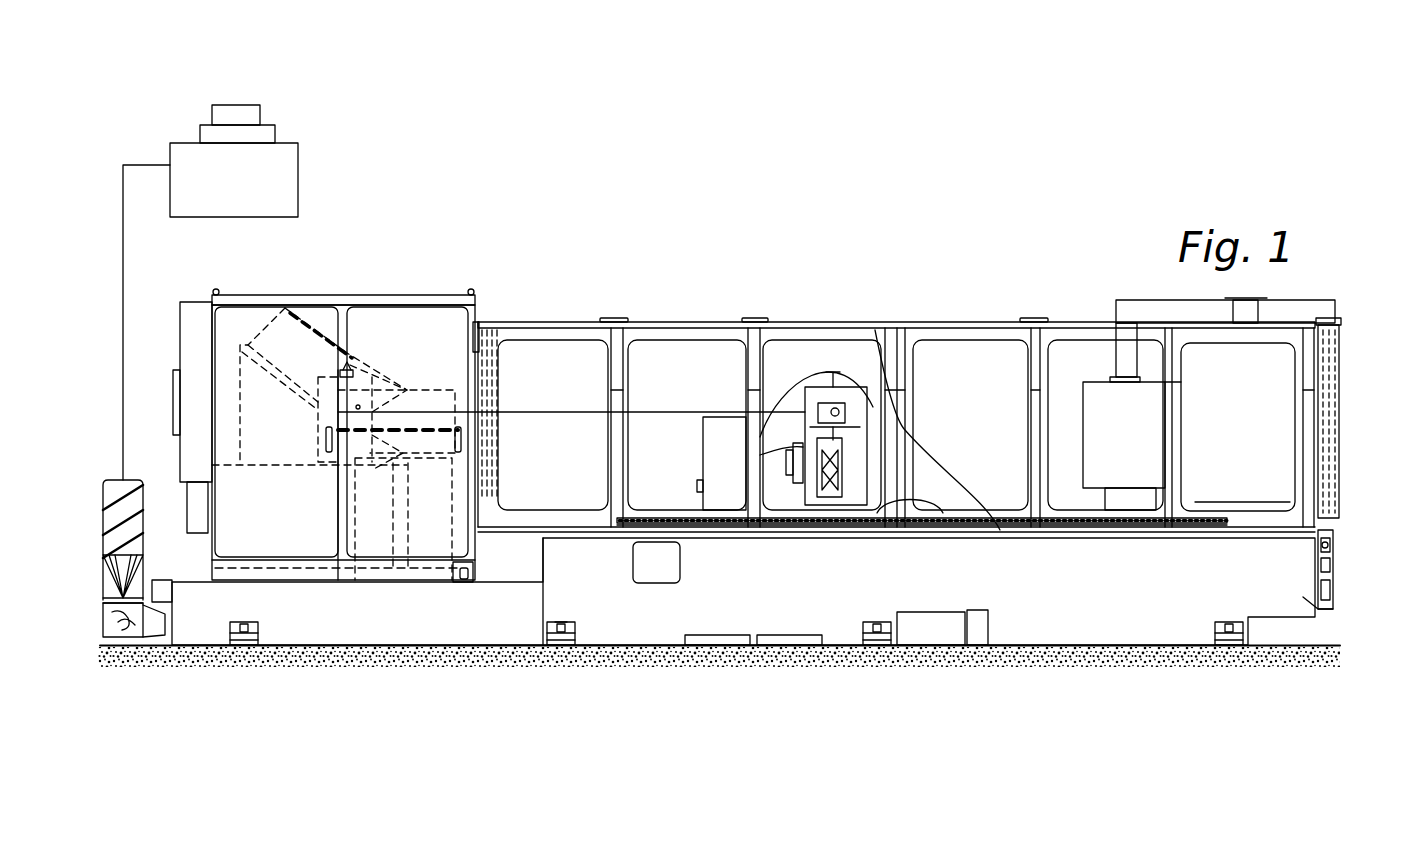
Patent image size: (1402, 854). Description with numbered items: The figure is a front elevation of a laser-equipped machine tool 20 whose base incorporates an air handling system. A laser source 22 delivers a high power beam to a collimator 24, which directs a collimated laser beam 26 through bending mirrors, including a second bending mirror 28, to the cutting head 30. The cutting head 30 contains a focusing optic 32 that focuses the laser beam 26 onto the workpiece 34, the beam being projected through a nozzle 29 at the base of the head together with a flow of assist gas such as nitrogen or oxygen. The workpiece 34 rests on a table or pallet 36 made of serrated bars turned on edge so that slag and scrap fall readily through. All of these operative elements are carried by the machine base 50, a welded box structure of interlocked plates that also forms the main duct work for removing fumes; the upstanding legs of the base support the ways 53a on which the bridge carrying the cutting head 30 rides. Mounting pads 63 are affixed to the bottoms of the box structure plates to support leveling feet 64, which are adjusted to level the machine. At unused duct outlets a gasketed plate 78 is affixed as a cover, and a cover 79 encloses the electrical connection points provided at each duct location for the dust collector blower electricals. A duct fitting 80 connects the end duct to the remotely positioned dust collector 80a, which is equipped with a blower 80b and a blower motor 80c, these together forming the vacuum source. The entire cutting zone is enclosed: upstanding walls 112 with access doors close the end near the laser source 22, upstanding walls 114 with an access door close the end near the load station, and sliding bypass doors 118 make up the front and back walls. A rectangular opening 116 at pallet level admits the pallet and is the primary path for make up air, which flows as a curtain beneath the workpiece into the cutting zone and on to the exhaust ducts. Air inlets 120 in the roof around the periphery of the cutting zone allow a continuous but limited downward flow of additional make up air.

The machine tool 20 is at (968, 190).
The laser source 22 is at (263, 323).
The collimator 24 is at (420, 390).
The collimated laser beam 26 is at (562, 412).
The second bending mirror 28 is at (845, 400).
The nozzle 29 is at (835, 498).
The cutting head 30 is at (799, 456).
The focusing optic 32 is at (867, 470).
The workpiece 34 is at (870, 524).
The table or pallet 36 is at (1085, 524).
The machine base 50 is at (1045, 625).
The ways 53a is at (797, 447).
The mounting pads 63 is at (578, 623).
The leveling feet 64 is at (240, 645).
The gasketed plate 78 is at (918, 612).
The cover 79 is at (980, 610).
The duct fitting 80 is at (107, 612).
The dust collector 80a is at (223, 205).
The blower 80b is at (262, 134).
The blower motor 80c is at (258, 113).
The upstanding walls 112 is at (490, 330).
The upstanding walls 114 is at (1350, 342).
The rectangular opening 116 is at (1335, 526).
The doors 118 is at (963, 360).
The air inlets 120 is at (603, 318).